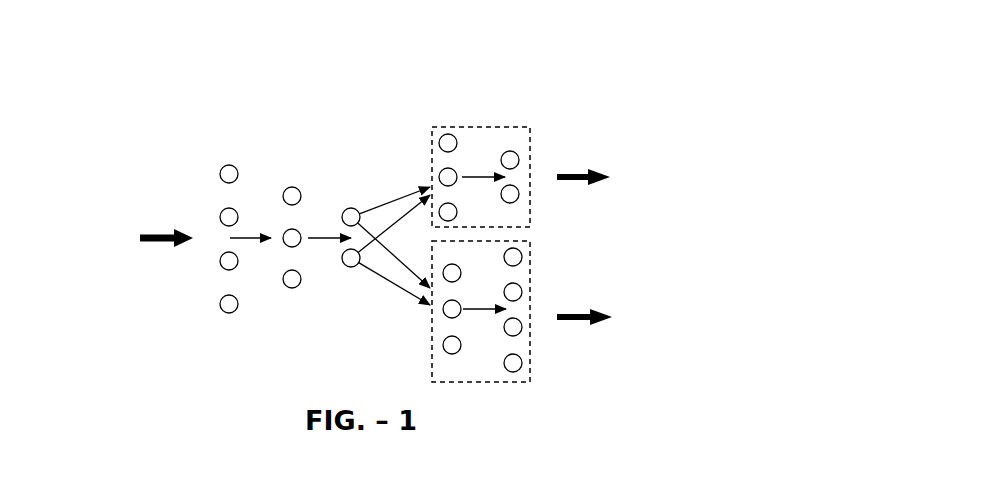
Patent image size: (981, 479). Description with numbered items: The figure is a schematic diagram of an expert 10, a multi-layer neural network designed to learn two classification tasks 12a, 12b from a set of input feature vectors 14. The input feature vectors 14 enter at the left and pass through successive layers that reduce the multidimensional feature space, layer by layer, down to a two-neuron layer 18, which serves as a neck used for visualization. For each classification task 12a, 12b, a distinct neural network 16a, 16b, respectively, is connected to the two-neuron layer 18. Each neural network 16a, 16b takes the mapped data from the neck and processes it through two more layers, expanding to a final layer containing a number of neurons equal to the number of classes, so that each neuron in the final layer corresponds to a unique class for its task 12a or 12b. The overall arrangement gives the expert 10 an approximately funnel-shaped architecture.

The expert 10 is at (550, 45).
The first task 12a is at (563, 175).
The second task 12b is at (562, 313).
The input feature vectors 14 is at (153, 243).
The first neural network 16a is at (465, 125).
The second neural network 16b is at (462, 383).
The two-neuron layer 18 is at (355, 292).